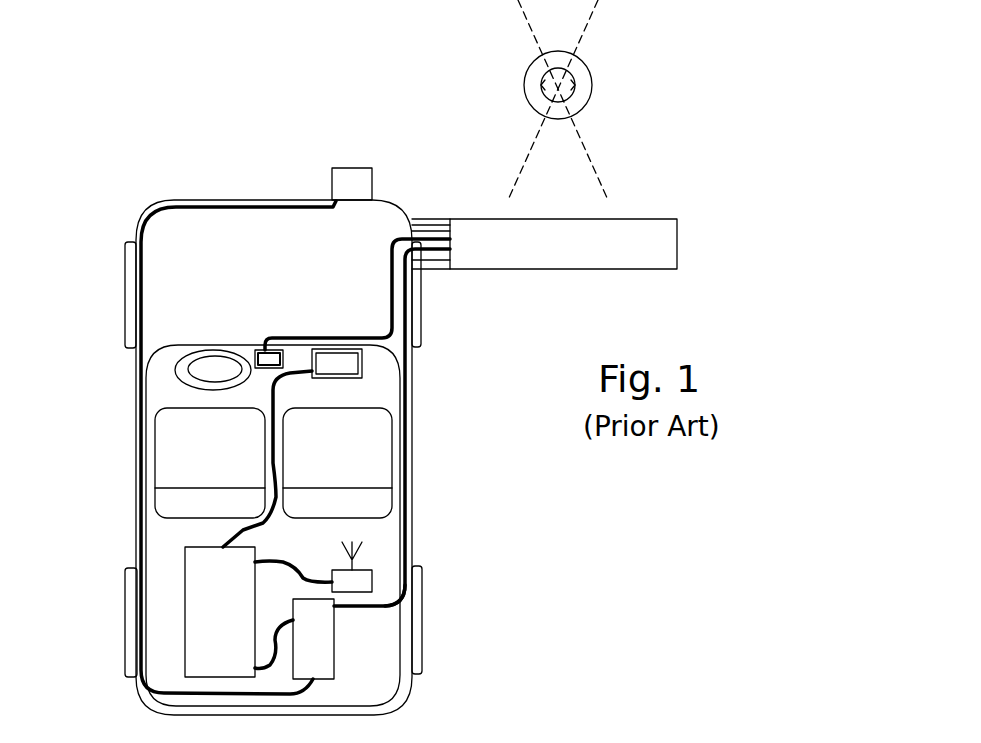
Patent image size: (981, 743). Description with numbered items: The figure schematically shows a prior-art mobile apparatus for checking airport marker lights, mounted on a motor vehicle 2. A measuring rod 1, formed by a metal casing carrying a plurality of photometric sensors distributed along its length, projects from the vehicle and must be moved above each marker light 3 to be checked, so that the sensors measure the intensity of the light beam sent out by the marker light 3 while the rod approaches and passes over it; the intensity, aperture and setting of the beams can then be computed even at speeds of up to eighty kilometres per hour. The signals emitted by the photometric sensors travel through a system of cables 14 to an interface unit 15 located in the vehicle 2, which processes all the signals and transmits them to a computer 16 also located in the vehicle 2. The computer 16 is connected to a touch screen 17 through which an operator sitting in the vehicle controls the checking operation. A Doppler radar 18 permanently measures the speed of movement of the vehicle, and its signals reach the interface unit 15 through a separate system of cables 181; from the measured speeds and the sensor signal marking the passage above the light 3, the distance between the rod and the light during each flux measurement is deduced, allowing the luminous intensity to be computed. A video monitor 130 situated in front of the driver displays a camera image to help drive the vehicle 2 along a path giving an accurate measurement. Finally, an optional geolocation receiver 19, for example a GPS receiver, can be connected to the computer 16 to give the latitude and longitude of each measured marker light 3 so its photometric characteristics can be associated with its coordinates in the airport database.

The measuring rod 1 is at (543, 258).
The motor vehicle 2 is at (195, 235).
The marker light 3 is at (582, 83).
The system of cables 14 is at (377, 606).
The interface unit 15 is at (322, 657).
The computer 16 is at (202, 655).
The touch screen 17 is at (342, 369).
The Doppler radar 18 is at (352, 178).
The geolocation receiver 19 is at (358, 580).
The video monitor 130 is at (258, 349).
The system of cables 181 is at (163, 218).